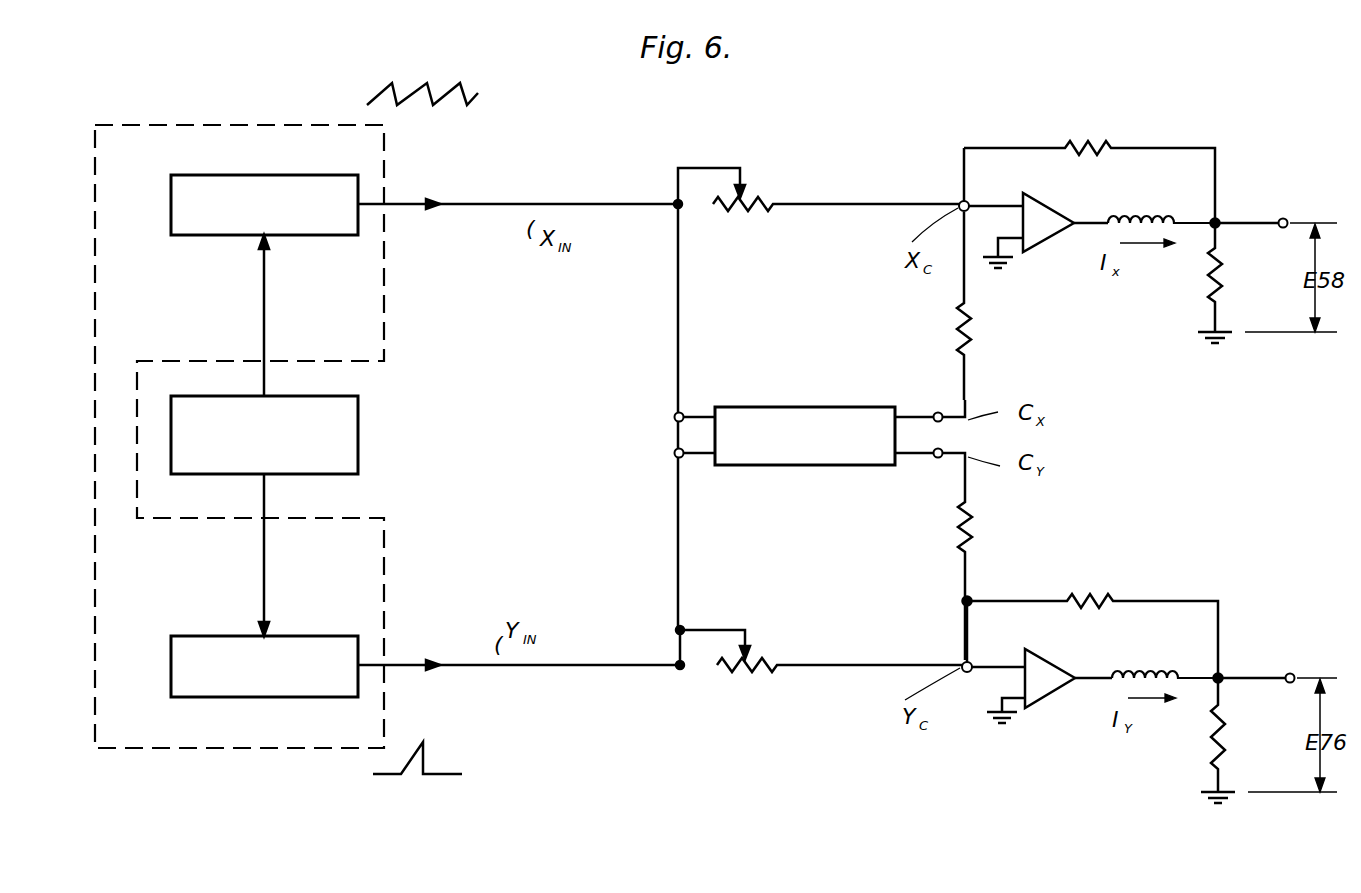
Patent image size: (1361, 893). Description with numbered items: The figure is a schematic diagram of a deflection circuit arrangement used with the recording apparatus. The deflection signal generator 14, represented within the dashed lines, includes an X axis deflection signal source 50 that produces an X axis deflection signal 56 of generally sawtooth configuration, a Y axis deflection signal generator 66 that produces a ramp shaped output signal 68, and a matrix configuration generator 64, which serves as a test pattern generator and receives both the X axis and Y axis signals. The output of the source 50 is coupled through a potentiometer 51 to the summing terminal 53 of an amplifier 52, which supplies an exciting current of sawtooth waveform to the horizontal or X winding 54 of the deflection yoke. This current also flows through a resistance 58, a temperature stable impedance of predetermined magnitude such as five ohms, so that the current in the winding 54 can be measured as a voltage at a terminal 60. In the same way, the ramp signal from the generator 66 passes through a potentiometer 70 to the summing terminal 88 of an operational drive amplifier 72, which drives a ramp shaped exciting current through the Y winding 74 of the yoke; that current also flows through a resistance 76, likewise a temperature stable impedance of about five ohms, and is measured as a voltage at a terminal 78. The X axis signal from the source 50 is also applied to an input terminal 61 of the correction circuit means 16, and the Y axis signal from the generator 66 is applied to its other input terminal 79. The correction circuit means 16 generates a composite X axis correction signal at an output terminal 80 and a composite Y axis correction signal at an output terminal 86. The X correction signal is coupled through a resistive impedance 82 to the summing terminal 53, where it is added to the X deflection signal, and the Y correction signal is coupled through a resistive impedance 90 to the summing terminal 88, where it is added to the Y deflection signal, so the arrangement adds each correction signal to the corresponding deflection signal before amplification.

The deflection signal generator 14 is at (115, 123).
The X axis deflection signal source 50 is at (213, 175).
The matrix configuration generator 64 is at (196, 396).
The Y axis deflection signal generator 66 is at (207, 636).
The X axis deflection signal 56 is at (413, 84).
The ramp shaped output signal 68 is at (423, 744).
The potentiometer 51 is at (750, 195).
The potentiometer 70 is at (734, 674).
The correction circuit means 16 is at (795, 407).
The input terminal 61 is at (673, 417).
The input terminal 79 is at (675, 456).
The output terminal 80 is at (940, 405).
The output terminal 86 is at (937, 457).
The resistive impedance 82 is at (973, 320).
The resistive impedance 90 is at (977, 522).
The summing terminal 53 is at (960, 204).
The summing terminal 88 is at (972, 672).
The amplifier 52 is at (1047, 205).
The operational drive amplifier 72 is at (1053, 700).
The X winding 54 is at (1145, 214).
The winding 74 is at (1139, 670).
The resistance 58 is at (1218, 284).
The resistance 76 is at (1228, 735).
The terminal 60 is at (1283, 218).
The terminal 78 is at (1289, 677).